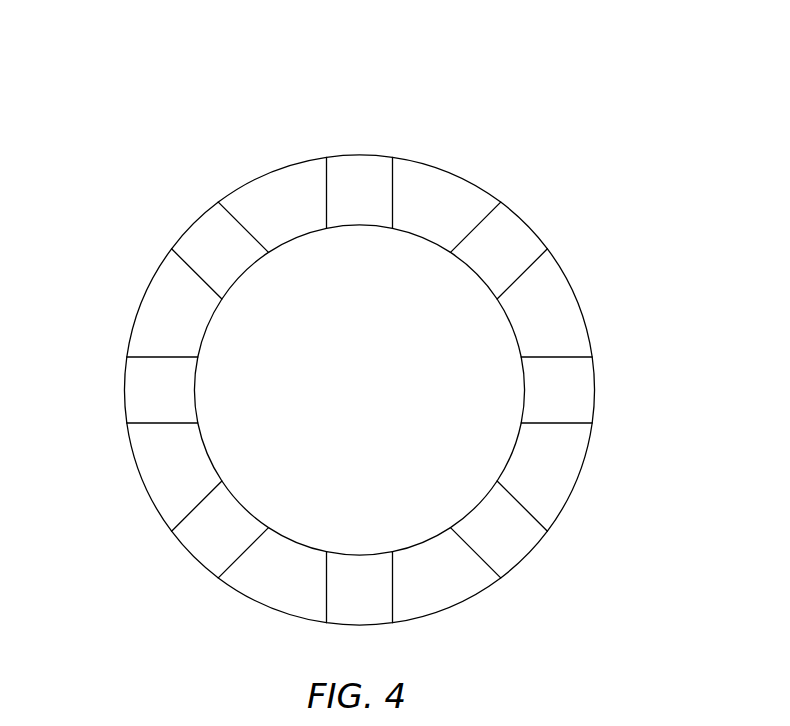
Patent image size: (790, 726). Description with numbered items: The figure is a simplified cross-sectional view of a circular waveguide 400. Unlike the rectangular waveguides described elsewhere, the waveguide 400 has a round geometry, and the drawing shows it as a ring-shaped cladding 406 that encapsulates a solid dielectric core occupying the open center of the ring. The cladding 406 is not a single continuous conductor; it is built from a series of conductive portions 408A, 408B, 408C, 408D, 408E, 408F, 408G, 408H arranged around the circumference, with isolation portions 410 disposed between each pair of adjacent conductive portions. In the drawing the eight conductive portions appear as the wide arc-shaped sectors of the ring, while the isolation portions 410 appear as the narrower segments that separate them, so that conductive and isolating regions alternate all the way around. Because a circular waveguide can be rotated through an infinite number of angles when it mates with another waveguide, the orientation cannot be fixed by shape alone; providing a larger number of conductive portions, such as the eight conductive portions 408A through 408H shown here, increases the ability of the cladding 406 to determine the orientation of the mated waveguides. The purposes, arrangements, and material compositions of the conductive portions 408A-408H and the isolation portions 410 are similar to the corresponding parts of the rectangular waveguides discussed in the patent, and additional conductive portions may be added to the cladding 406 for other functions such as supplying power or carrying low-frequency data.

The circular waveguide 400 is at (270, 93).
The cladding 406 is at (565, 270).
The conductive portion 408A is at (285, 192).
The conductive portion 408B is at (443, 192).
The conductive portion 408C is at (558, 308).
The conductive portion 408D is at (558, 462).
The conductive portion 408E is at (453, 580).
The conductive portion 408F is at (285, 595).
The conductive portion 408G is at (158, 470).
The conductive portion 408H is at (163, 313).
The isolation portion 410 is at (370, 165).